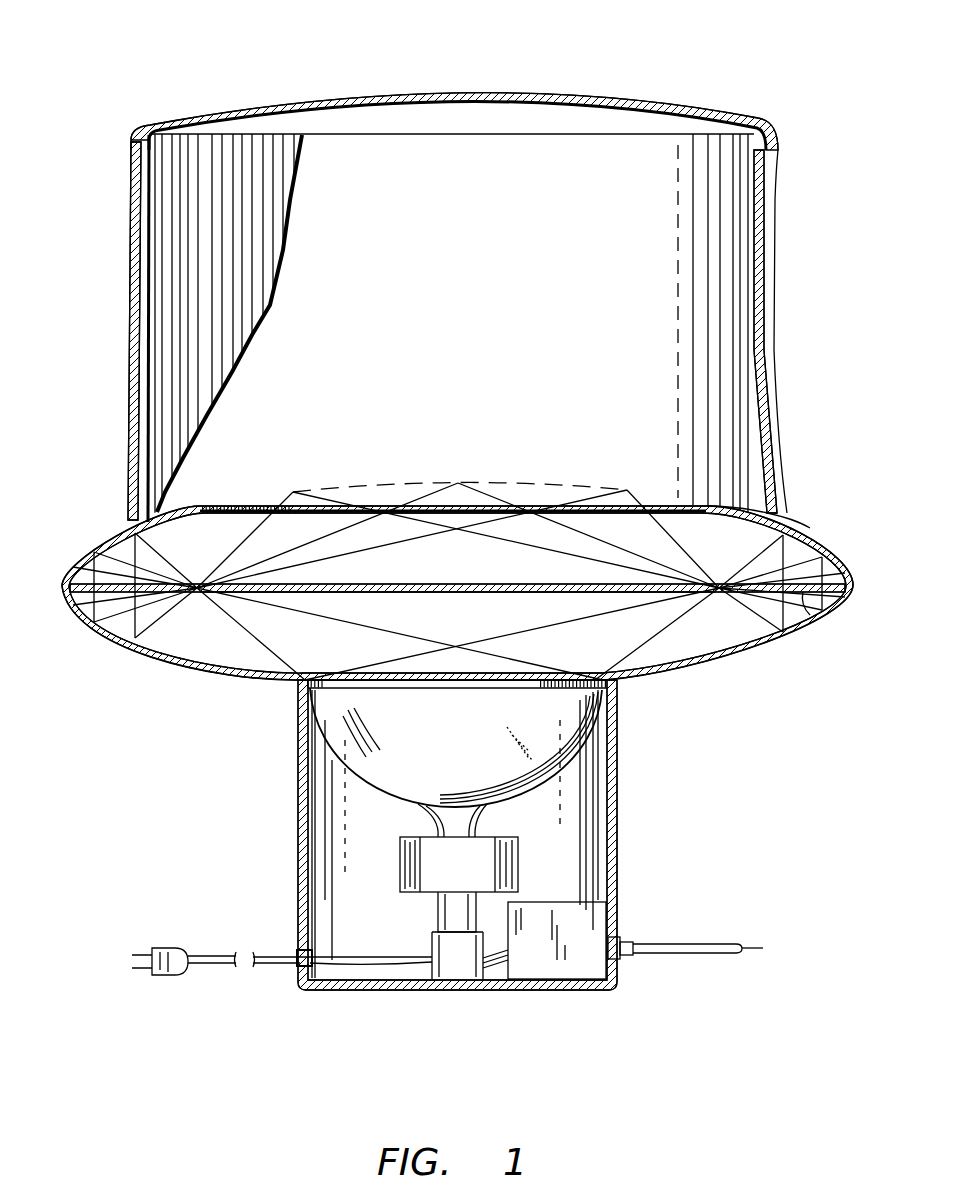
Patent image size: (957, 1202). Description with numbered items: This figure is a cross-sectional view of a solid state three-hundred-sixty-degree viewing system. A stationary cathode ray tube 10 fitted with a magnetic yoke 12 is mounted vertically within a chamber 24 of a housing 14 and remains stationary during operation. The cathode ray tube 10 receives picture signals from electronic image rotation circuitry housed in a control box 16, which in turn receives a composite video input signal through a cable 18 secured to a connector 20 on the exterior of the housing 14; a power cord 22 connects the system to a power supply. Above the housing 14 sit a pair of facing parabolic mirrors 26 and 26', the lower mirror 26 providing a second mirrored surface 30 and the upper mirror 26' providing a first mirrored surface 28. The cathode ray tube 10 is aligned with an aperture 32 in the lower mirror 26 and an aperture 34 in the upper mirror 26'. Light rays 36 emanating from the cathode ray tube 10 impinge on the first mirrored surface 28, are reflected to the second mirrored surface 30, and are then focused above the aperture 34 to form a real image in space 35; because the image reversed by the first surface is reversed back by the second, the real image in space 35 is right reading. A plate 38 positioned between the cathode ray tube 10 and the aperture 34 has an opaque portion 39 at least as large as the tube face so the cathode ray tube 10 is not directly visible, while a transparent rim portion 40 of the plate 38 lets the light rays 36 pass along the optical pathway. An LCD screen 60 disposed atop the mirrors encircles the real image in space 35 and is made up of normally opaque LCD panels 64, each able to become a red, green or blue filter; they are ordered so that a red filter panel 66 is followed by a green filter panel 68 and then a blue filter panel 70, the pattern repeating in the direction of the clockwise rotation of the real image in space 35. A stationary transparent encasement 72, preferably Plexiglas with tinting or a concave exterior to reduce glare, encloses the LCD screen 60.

The cathode ray tube 10 is at (400, 733).
The magnetic yoke 12 is at (410, 862).
The housing 14 is at (297, 833).
The control box 16 is at (577, 957).
The cable 18 is at (713, 942).
The connector 20 is at (632, 937).
The power cord 22 is at (203, 965).
The chamber 24 is at (563, 832).
The lower parabolic mirror 26 is at (445, 595).
The upper parabolic mirror 26' is at (782, 513).
The first mirrored surface 28 is at (170, 520).
The second mirrored surface 30 is at (160, 648).
The aperture 32 is at (313, 648).
The aperture 34 is at (239, 500).
The real image in space 35 is at (458, 483).
The light rays 36 is at (325, 545).
The plate 38 is at (424, 574).
The opaque portion 39 is at (360, 583).
The transparent rim portion 40 is at (82, 585).
The LCD screen 60 is at (148, 197).
The LCD panels 64 is at (196, 324).
The red filter panel 66 is at (241, 145).
The green filter panel 68 is at (222, 148).
The blue filter panel 70 is at (222, 147).
The transparent encasement 72 is at (780, 148).